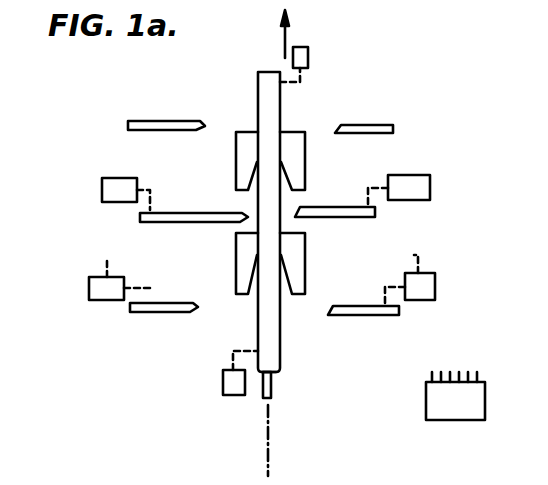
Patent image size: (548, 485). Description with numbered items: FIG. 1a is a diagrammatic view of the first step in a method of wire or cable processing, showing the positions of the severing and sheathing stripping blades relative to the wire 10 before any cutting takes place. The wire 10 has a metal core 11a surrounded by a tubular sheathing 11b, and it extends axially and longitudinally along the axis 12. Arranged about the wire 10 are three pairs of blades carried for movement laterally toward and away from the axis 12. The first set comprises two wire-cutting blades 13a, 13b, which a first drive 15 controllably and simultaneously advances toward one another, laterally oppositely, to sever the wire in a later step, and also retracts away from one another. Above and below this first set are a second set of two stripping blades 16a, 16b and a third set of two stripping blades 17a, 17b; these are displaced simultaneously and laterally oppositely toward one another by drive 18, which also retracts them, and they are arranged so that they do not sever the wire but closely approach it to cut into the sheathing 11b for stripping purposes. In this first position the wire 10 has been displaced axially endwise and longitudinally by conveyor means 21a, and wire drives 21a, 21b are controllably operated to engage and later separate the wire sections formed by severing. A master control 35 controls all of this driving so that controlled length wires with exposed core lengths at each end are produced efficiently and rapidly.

The wire 10 is at (298, 335).
The metal core 11a is at (271, 388).
The tubular sheathing 11b is at (280, 348).
The wire axis 12 is at (265, 452).
The wire-cutting blade 13a is at (180, 212).
The wire-cutting blade 13b is at (330, 207).
The first drive 15 is at (102, 180).
The sheathing stripping blade 16a is at (137, 313).
The sheathing stripping blade 16b is at (345, 306).
The sheathing stripping blade 17a is at (158, 120).
The sheathing stripping blade 17b is at (380, 125).
The drive 18 is at (89, 283).
The conveyor means 21a is at (223, 384).
The wire drive 21b is at (308, 52).
The master control 35 is at (450, 405).